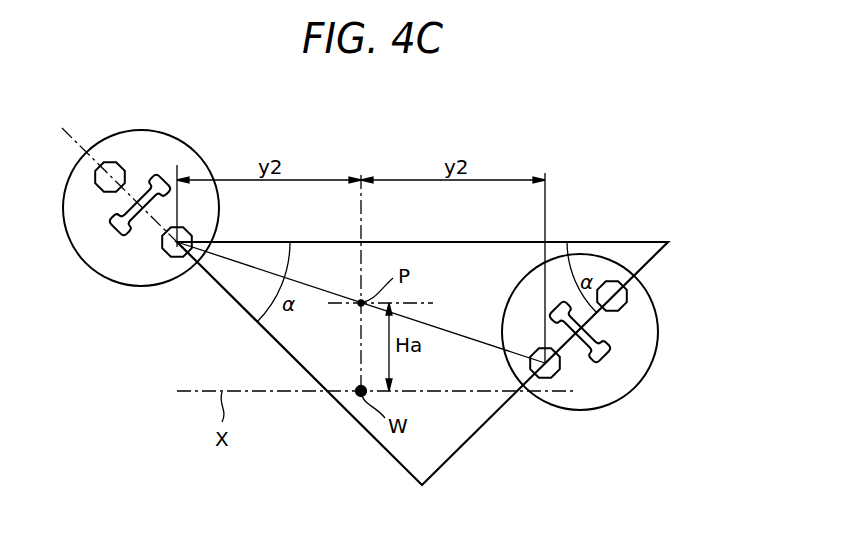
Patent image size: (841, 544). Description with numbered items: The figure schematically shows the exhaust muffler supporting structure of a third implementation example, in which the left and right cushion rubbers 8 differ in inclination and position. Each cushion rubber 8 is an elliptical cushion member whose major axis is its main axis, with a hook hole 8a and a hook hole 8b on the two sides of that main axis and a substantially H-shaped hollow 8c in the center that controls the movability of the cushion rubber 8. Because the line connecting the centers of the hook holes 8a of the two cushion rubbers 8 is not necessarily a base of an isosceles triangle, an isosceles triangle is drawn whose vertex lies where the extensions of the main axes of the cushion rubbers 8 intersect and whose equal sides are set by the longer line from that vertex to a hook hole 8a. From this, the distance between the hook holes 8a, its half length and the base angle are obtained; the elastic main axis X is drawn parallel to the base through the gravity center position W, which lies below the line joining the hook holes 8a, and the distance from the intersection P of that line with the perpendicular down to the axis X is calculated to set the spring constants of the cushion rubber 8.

The cushion rubber 8 is at (75, 245).
The hook hole 8a is at (168, 247).
The hook hole 8b is at (110, 165).
The hollow 8c is at (117, 237).